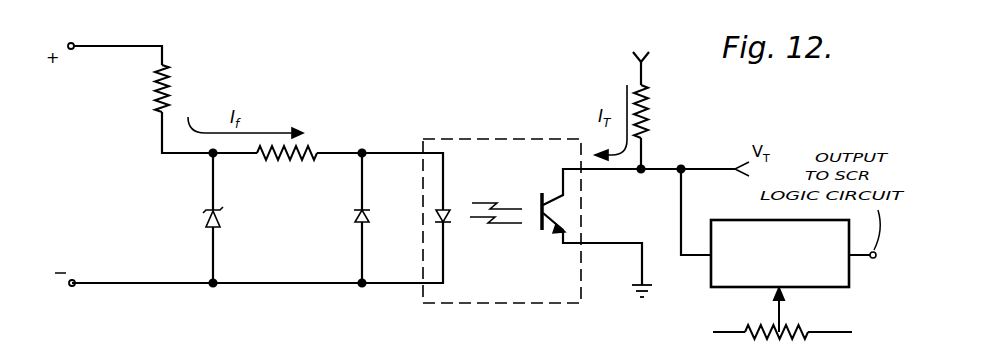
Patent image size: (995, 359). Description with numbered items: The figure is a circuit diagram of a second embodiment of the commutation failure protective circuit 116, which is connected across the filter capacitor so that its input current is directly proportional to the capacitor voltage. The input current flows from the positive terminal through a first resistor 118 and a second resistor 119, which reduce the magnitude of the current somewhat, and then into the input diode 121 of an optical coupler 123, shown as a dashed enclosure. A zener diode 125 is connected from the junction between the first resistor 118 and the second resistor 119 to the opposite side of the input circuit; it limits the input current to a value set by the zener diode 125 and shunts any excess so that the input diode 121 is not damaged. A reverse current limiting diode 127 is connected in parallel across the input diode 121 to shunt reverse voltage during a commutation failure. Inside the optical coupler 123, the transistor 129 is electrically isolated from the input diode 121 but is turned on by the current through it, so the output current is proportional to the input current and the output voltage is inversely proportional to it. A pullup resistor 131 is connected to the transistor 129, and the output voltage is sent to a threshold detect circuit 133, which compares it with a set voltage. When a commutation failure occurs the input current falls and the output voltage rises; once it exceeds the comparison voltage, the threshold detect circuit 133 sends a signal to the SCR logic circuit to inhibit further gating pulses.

The commutation failure protective circuit 116 is at (516, 207).
The first resistor 118 is at (172, 85).
The second resistor 119 is at (287, 161).
The input diode 121 is at (418, 217).
The optical coupler 123 is at (467, 305).
The zener diode 125 is at (200, 220).
The reverse current limiting diode 127 is at (357, 213).
The transistor 129 is at (553, 230).
The pullup resistor 131 is at (645, 108).
The threshold detect circuit 133 is at (708, 286).